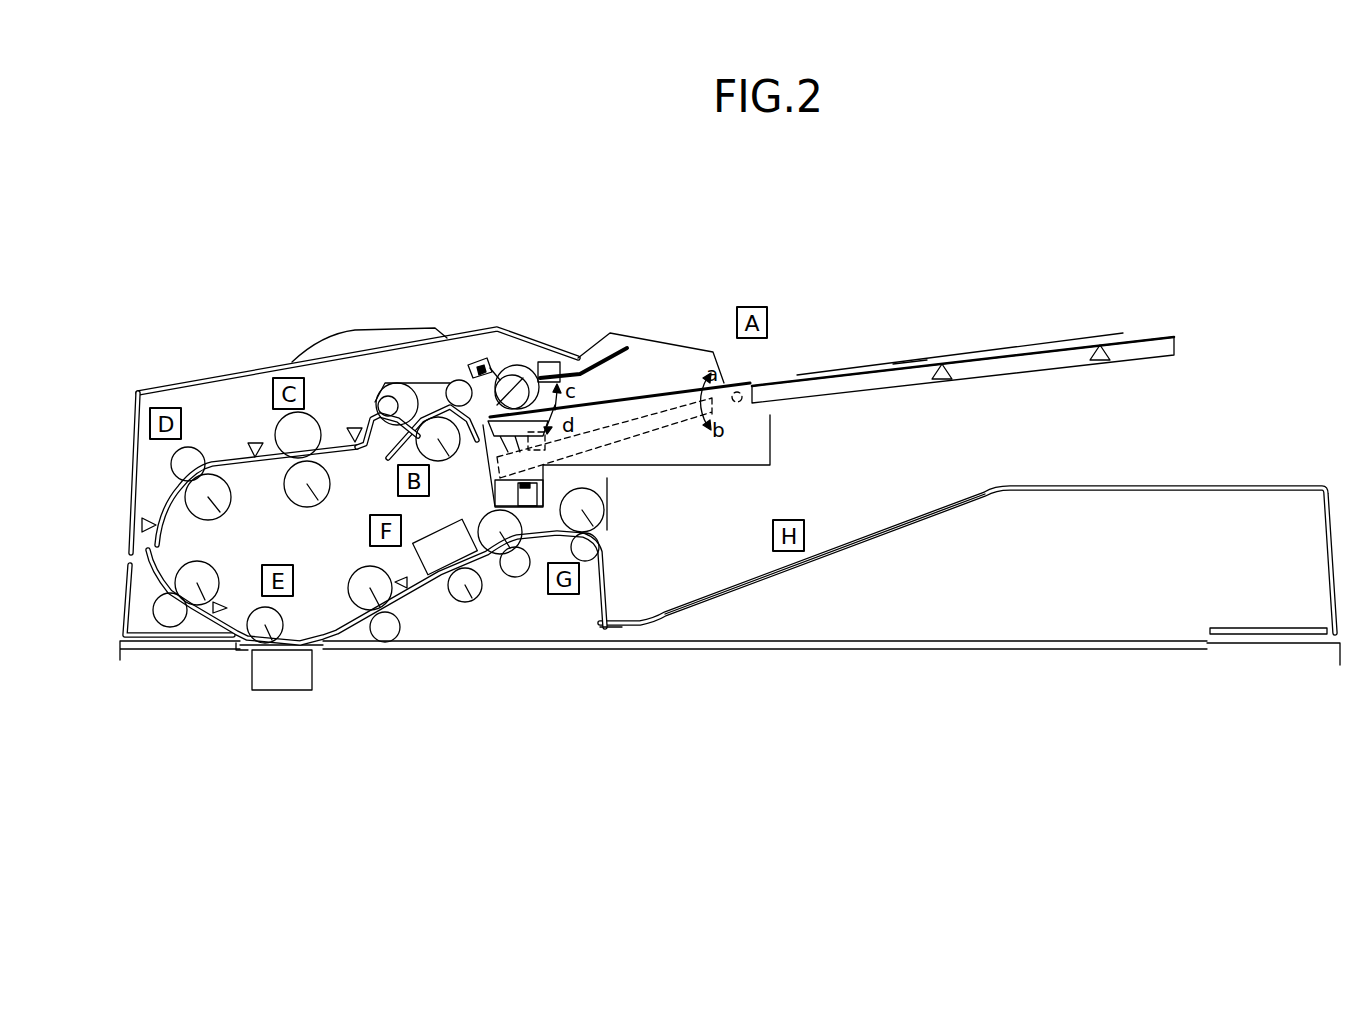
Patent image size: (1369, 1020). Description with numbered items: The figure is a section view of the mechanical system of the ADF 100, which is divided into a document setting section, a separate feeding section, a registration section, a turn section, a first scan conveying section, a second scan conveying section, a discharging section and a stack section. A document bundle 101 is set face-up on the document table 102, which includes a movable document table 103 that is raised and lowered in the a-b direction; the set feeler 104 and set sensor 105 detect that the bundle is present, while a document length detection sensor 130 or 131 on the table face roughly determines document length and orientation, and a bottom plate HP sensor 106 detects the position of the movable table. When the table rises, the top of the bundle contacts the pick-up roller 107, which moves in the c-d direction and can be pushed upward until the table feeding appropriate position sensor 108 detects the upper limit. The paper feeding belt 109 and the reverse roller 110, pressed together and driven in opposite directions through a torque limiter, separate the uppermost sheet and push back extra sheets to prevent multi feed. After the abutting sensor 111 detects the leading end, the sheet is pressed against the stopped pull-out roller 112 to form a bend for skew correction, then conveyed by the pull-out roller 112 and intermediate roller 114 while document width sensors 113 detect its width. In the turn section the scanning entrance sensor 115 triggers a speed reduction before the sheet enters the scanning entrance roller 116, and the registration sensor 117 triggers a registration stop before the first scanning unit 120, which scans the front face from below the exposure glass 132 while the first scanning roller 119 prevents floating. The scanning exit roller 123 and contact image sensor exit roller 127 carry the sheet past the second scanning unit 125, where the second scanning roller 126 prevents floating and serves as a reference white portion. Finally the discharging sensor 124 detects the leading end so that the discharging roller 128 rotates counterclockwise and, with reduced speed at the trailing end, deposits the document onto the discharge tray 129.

The ADF 100 is at (1072, 235).
The document bundle 101 is at (802, 373).
The document table 102 is at (867, 375).
The movable document table 103 is at (690, 387).
The set feeler 104 is at (532, 370).
The set sensor 105 is at (570, 413).
The bottom plate HP sensor 106 is at (530, 493).
The pick-up roller 107 is at (507, 373).
The table feeding appropriate position sensor 108 is at (473, 360).
The paper feeding belt 109 is at (442, 443).
The reverse roller 110 is at (432, 437).
The abutting sensor 111 is at (355, 428).
The pull-out roller 112 is at (307, 482).
The document width sensors 113 is at (255, 443).
The intermediate roller 114 is at (177, 487).
The scanning entrance sensor 115 is at (142, 525).
The scanning entrance roller 116 is at (182, 622).
The registration sensor 117 is at (213, 625).
The first scanning roller 119 is at (265, 625).
The first scanning unit 120 is at (283, 692).
The scanning exit roller 123 is at (378, 610).
The discharging sensor 124 is at (412, 610).
The second scanning unit 125 is at (445, 580).
The second scanning roller 126 is at (473, 603).
The contact image sensor (CIS) exit roller 127 is at (512, 577).
The discharging roller 128 is at (610, 560).
The discharge tray 129 is at (752, 590).
The document length detection sensor 130 is at (942, 362).
The document length detection sensor 131 is at (1100, 343).
The exposure glass 132 is at (243, 650).